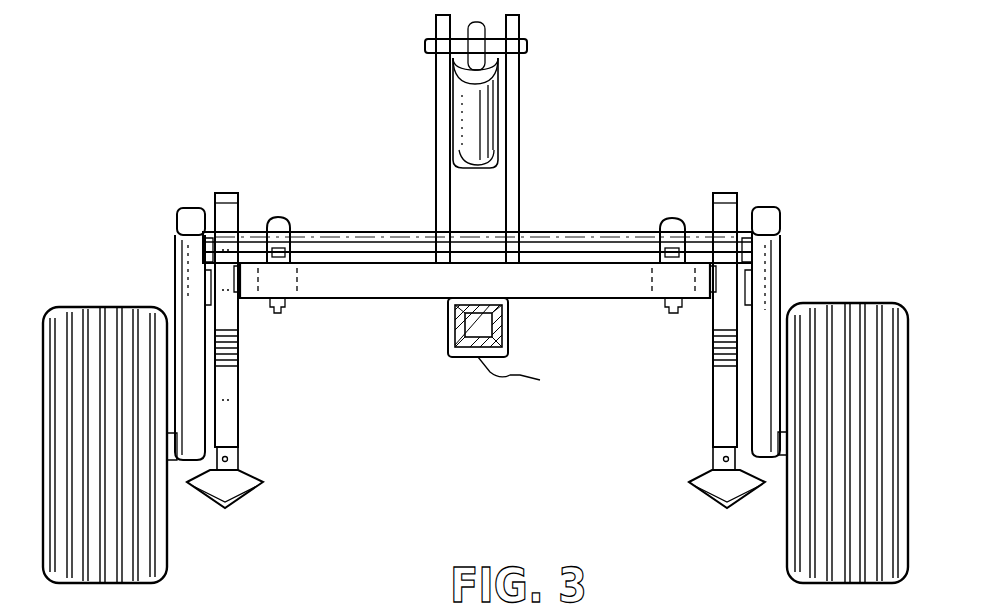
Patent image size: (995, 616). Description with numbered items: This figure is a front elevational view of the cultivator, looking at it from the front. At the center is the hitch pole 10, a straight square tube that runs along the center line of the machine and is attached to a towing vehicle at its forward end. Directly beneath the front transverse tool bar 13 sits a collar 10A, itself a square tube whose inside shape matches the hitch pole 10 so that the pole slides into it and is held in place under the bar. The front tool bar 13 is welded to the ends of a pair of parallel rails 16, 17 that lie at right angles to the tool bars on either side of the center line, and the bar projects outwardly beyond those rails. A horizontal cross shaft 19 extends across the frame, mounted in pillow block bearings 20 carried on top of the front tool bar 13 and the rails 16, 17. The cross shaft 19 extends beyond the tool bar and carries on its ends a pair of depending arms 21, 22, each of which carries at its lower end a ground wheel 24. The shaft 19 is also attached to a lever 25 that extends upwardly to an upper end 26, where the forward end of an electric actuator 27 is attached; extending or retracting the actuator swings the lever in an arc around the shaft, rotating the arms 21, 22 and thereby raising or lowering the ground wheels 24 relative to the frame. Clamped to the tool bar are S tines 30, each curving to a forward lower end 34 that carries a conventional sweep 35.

The hitch pole 10 is at (452, 325).
The collar 10A is at (494, 358).
The front transverse tool bar 13 is at (412, 270).
The rail 16 is at (642, 276).
The rail 17 is at (322, 284).
The horizontal cross shaft 19 is at (405, 232).
The pillow block bearings 20 is at (280, 217).
The depending arm 21 is at (173, 220).
The depending arm 22 is at (785, 245).
The ground wheel 24 is at (106, 303).
The lever 25 is at (434, 112).
The upper end 26 is at (520, 15).
The electric actuator 27 is at (490, 126).
The S tine 30 is at (242, 398).
The forward lower end 34 is at (235, 432).
The sweep 35 is at (238, 486).